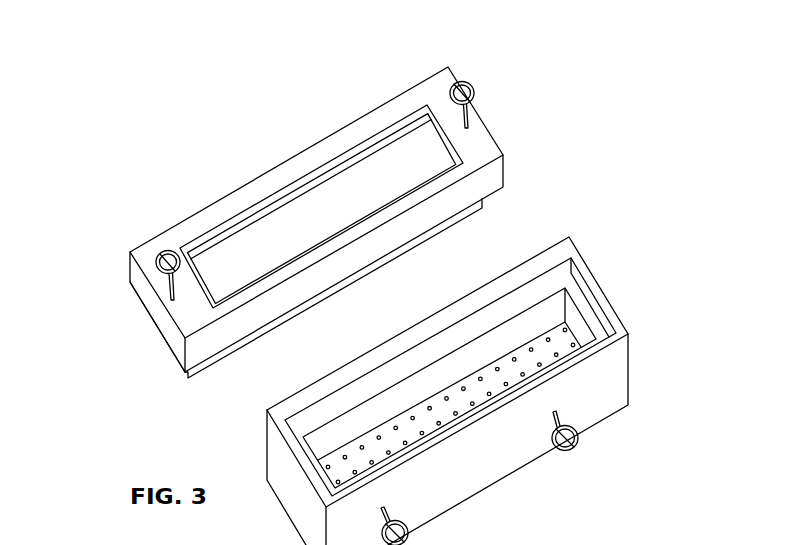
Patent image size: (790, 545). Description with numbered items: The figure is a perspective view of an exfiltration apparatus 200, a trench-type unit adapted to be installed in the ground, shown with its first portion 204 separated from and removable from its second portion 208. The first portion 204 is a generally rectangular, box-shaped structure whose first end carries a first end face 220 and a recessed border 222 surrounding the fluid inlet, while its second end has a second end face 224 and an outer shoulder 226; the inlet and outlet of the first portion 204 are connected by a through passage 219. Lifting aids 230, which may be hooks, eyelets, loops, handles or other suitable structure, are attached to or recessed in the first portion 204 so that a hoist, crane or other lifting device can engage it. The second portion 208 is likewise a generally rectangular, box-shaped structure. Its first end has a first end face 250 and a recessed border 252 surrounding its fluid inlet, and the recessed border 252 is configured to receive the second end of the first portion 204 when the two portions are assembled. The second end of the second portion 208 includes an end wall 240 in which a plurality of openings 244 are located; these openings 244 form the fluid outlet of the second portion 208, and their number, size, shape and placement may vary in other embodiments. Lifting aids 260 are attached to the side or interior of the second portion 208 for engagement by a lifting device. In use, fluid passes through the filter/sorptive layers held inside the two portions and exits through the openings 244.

The exfiltration apparatus 200 is at (82, 101).
The first portion 204 is at (556, 50).
The second portion 208 is at (668, 243).
The through passage 219 is at (330, 224).
The first end face 220 is at (227, 207).
The recessed border 222 is at (287, 195).
The second end face 224 is at (215, 374).
The outer shoulder 226 is at (183, 376).
The lifting aids 230 is at (466, 80).
The end wall 240 is at (548, 356).
The openings 244 is at (560, 352).
The first end face 250 is at (538, 262).
The recessed border 252 is at (573, 288).
The lifting aids 260 is at (583, 445).